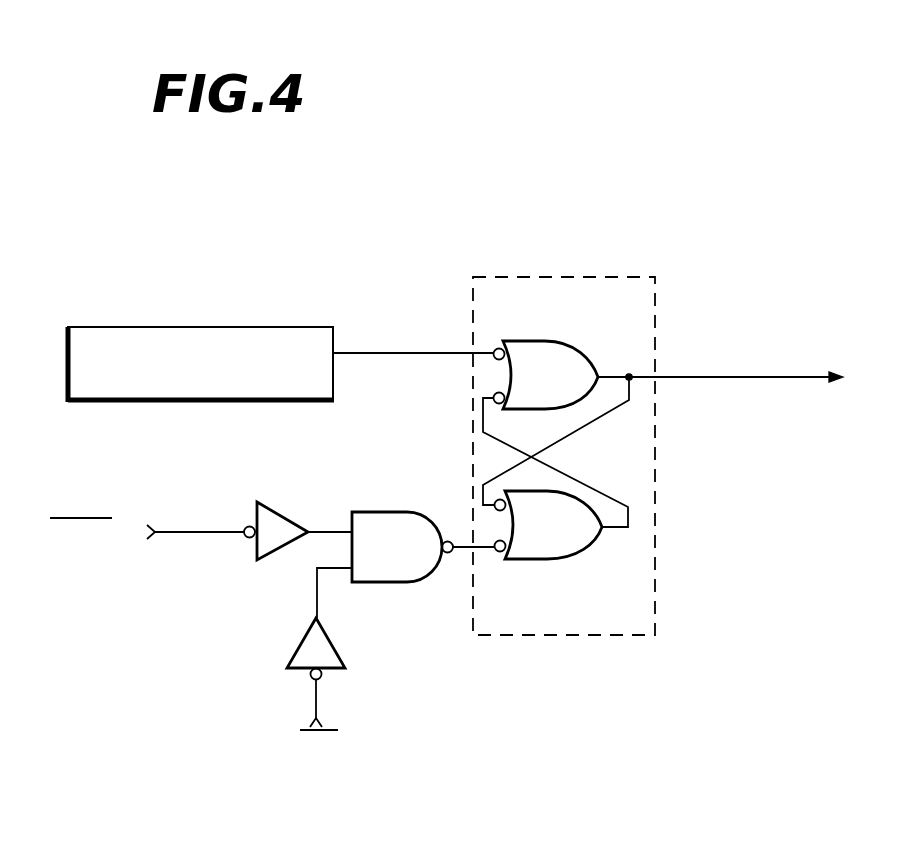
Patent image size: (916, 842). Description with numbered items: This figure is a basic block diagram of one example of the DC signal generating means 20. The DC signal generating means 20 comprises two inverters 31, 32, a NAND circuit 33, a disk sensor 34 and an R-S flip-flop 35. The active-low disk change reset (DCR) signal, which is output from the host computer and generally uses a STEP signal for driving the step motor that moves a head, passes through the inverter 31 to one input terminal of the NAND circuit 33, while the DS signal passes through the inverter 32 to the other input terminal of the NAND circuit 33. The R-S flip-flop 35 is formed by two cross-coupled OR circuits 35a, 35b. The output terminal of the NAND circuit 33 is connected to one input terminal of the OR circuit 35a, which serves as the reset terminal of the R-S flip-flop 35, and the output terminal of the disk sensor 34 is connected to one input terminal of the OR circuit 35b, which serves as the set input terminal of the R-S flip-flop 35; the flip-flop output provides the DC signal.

The DC signal generating means 20 is at (511, 214).
The inverter 31 is at (280, 513).
The inverter 32 is at (305, 642).
The NAND circuit 33 is at (387, 583).
The disk sensor 34 is at (183, 327).
The R-S flip-flop 35 is at (577, 277).
The OR circuit 35a is at (542, 560).
The OR circuit 35b is at (543, 340).